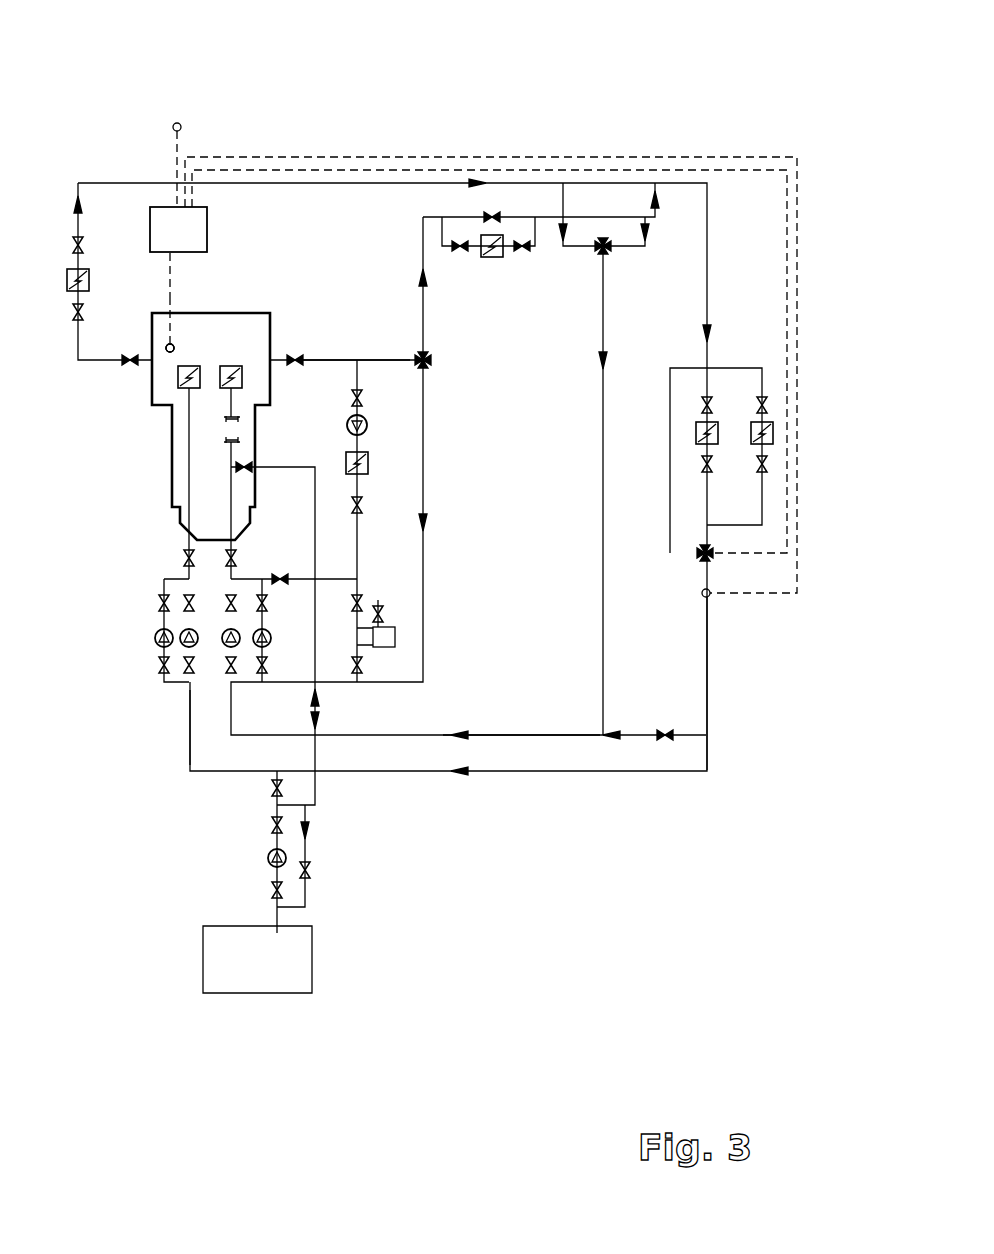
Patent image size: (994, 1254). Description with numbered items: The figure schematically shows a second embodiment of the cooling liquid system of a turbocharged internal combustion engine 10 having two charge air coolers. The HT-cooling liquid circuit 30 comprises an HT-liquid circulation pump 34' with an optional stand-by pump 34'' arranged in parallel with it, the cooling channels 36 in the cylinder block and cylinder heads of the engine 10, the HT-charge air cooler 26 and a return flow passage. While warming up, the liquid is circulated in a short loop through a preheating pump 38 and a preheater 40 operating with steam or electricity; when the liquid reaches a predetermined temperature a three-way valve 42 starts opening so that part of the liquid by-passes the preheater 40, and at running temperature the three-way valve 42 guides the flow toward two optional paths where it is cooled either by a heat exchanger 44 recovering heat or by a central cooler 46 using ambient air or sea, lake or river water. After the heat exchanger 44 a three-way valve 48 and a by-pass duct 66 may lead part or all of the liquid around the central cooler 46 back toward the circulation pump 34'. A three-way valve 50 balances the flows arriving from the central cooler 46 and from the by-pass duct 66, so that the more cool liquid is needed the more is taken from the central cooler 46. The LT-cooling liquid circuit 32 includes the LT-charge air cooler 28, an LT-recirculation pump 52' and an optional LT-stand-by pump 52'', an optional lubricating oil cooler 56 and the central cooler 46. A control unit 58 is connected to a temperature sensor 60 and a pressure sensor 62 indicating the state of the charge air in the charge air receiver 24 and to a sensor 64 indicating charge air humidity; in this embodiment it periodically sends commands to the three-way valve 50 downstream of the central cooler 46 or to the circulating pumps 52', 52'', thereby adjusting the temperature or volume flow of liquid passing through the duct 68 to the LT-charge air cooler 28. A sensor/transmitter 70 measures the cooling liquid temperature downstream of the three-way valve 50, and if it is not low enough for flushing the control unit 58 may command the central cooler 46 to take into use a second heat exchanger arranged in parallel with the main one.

The internal combustion engine 10 is at (208, 453).
The charge air receiver 24 is at (170, 302).
The HT-charge air cooler 26 is at (232, 366).
The LT-charge air cooler 28 is at (190, 366).
The HT-cooling liquid circuit 30 is at (322, 360).
The LT-cooling liquid circuit 32 is at (187, 722).
The HT-liquid circulation pump 34' is at (379, 596).
The stand-by pump 34'' is at (398, 617).
The cooling channels 36 is at (225, 430).
The preheating pump 38 is at (367, 422).
The preheater 40 is at (368, 460).
The three-way valve 42 is at (428, 353).
The heat exchanger 44 is at (500, 235).
The central cooler 46 is at (733, 400).
The three-way valve 48 is at (606, 243).
The three-way valve 50 is at (700, 556).
The LT-recirculation pump 52' is at (111, 646).
The LT-stand-by pump 52'' is at (134, 687).
The lubricating oil cooler 56 is at (90, 270).
The control unit 58 is at (200, 246).
The temperature sensor 60 is at (173, 345).
The pressure sensor 62 is at (170, 326).
The humidity sensor 64 is at (177, 123).
The by-pass duct 66 is at (670, 400).
The duct 68 is at (707, 680).
The temperature sensor/transmitter 70 is at (710, 593).